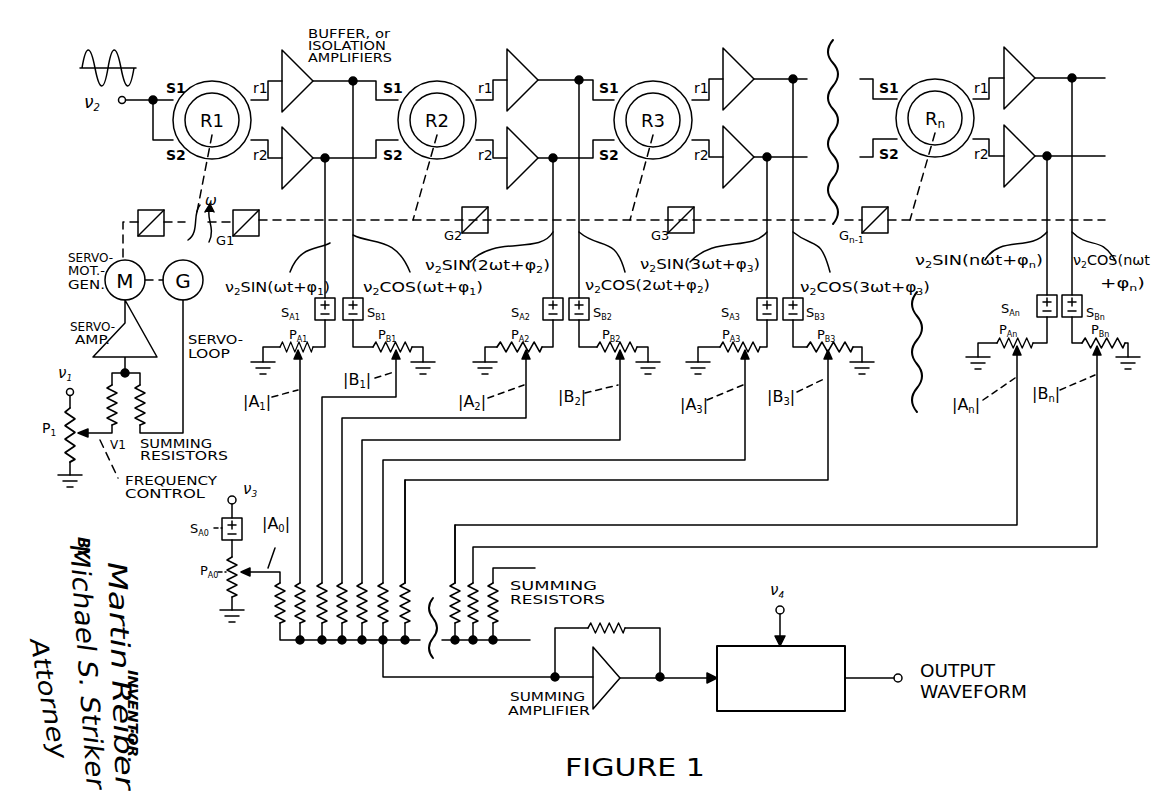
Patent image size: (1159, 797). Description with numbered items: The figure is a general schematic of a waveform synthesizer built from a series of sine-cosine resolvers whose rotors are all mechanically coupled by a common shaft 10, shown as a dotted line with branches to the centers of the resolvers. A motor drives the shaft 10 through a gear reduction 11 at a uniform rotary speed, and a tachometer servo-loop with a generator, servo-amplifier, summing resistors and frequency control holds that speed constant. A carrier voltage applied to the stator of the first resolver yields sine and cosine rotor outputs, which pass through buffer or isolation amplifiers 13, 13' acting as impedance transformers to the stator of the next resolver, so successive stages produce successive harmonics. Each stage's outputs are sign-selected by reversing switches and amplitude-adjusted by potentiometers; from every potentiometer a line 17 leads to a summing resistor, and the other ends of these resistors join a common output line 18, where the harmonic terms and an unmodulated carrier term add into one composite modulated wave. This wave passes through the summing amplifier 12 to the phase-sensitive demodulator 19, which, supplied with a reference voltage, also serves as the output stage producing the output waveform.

The shaft 10 is at (190, 235).
The gear reduction 11 is at (161, 210).
The summing amplifier 12 is at (604, 676).
The amplifier 13 is at (301, 81).
The amplifier 13' is at (302, 158).
The line 17 is at (455, 530).
The output line 18 is at (501, 641).
The phase-sensitive demodulator 19 is at (825, 645).